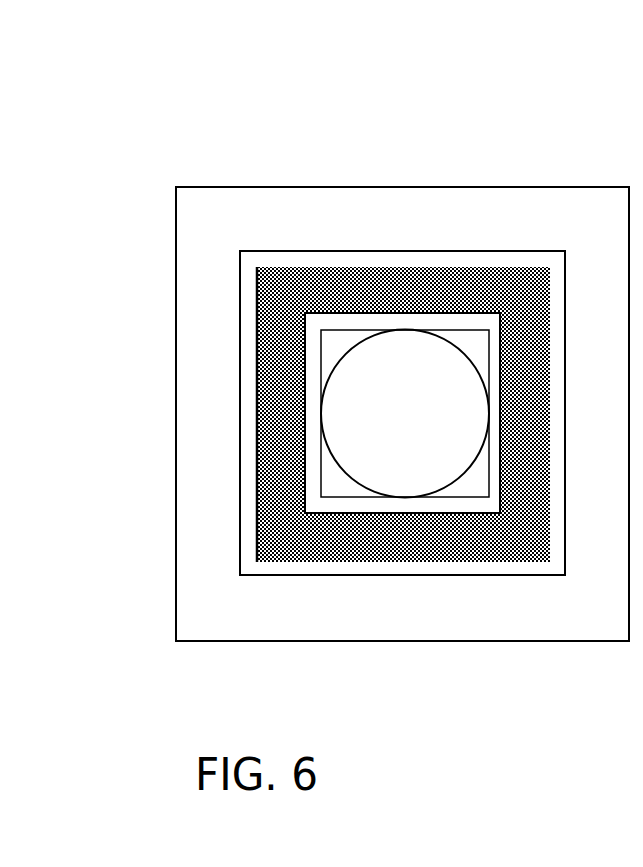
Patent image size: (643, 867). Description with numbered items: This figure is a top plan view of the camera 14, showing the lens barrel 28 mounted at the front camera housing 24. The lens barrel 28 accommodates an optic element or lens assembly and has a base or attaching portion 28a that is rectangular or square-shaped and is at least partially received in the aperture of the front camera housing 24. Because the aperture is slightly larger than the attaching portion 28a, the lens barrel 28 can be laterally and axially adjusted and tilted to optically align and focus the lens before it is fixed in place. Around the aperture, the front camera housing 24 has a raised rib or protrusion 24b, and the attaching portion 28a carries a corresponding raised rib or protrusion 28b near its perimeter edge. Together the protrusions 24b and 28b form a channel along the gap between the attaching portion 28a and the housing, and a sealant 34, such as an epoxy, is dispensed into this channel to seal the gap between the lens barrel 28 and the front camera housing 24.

The sensor assembly 14 is at (511, 135).
The front camera housing 24 is at (248, 218).
The raised rib or protrusion 24b is at (247, 492).
The sealant 34 is at (380, 272).
The lens barrel 28 is at (415, 355).
The attaching portion 28a is at (474, 489).
The raised rib or protrusion 28b is at (337, 511).